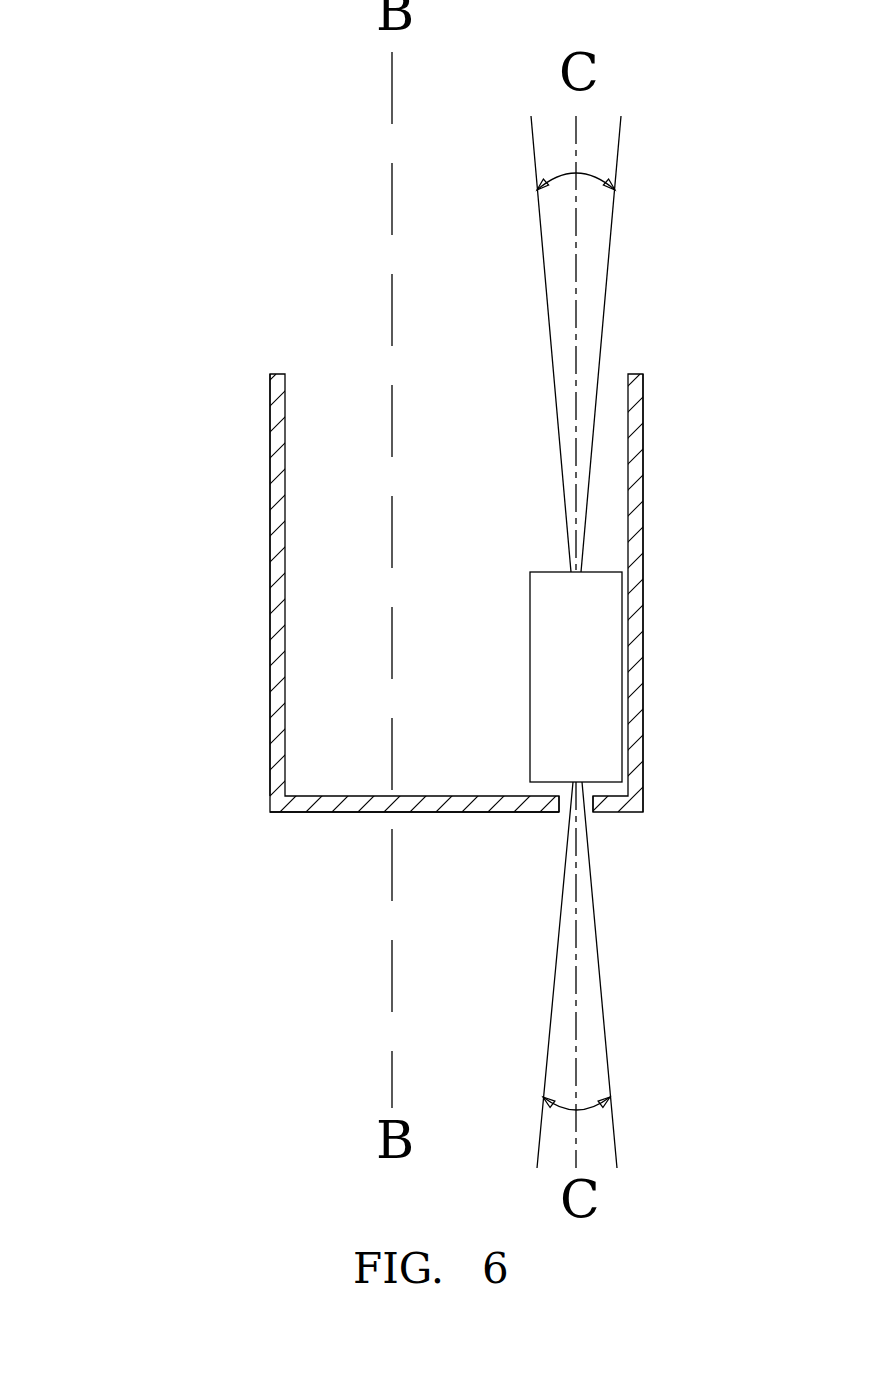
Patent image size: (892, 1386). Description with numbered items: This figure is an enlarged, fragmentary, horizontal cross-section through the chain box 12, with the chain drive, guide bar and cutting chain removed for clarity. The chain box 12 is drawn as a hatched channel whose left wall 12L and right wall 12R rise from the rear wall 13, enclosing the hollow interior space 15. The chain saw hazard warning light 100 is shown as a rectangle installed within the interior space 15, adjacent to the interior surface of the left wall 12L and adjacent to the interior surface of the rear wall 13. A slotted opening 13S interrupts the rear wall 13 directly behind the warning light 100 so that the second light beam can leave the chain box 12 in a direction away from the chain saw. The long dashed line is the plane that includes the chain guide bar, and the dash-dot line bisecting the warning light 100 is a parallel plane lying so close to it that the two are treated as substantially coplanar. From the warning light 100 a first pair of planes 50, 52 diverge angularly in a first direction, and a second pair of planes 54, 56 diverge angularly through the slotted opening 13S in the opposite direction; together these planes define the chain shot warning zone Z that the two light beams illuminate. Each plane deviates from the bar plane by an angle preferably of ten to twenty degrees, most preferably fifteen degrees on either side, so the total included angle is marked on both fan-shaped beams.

The chain box 12 is at (205, 381).
The right wall of the chain box 12R is at (270, 513).
The left wall of the chain box 12L is at (643, 500).
The rear wall of the chain box 13 is at (345, 812).
The slotted opening 13S is at (587, 812).
The hollow interior space 15 is at (369, 441).
The chain saw hazard warning light 100 is at (603, 663).
The first plane of the first pair 50 is at (540, 247).
The second plane of the first pair 52 is at (612, 247).
The first plane of the second pair 54 is at (548, 1036).
The second plane of the second pair 56 is at (605, 1036).
The chain shot warning zone Z is at (608, 298).